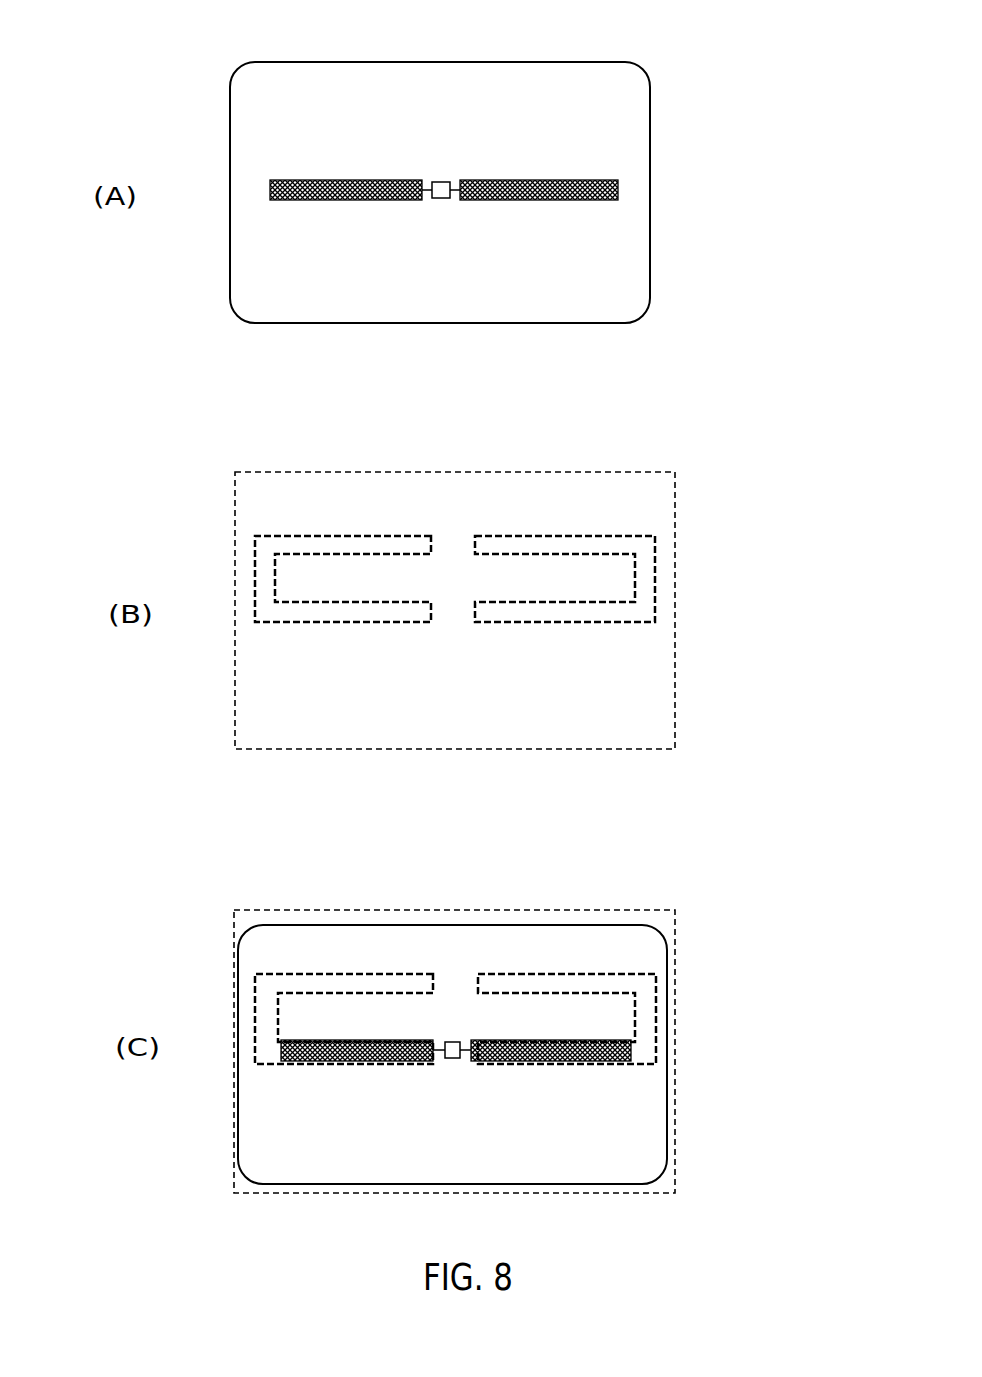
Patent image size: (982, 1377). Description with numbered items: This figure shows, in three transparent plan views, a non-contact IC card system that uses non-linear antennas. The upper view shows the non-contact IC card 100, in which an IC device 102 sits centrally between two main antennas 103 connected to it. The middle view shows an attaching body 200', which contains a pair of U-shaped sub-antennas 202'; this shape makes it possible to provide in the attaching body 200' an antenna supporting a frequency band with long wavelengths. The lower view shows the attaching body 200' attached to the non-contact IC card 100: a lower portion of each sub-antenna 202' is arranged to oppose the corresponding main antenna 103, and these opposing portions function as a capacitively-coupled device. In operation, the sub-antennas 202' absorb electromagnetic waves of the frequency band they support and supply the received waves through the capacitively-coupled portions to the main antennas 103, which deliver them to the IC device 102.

The non-contact IC card 100 is at (427, 62).
The main antenna 103 is at (312, 179).
The IC device 102 is at (440, 199).
The attaching body 200' is at (454, 803).
The sub-antenna 202' is at (455, 800).